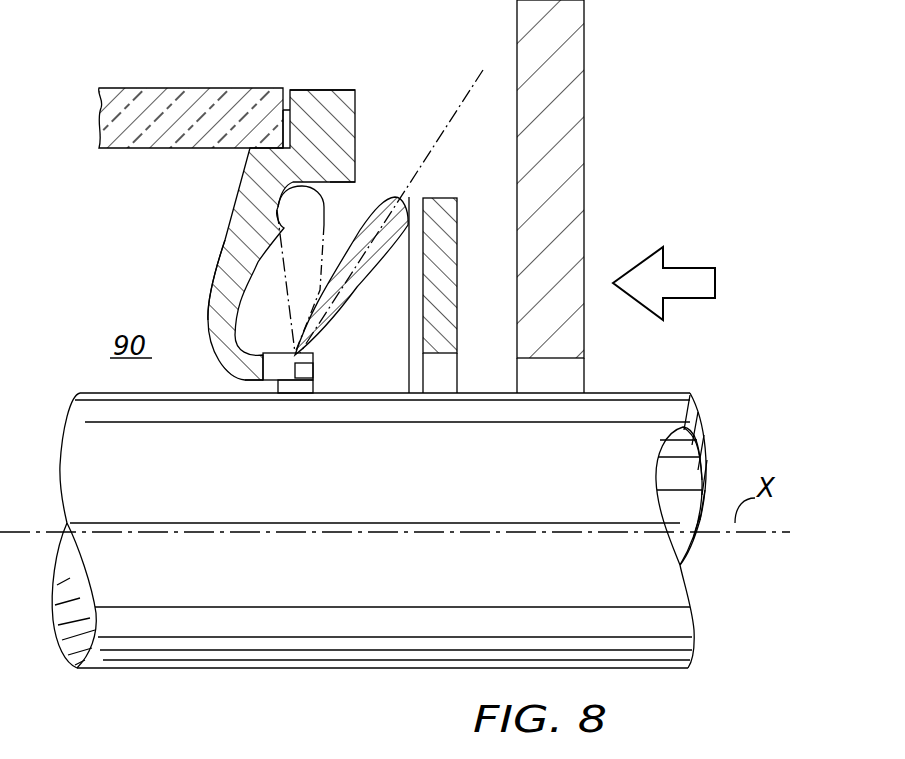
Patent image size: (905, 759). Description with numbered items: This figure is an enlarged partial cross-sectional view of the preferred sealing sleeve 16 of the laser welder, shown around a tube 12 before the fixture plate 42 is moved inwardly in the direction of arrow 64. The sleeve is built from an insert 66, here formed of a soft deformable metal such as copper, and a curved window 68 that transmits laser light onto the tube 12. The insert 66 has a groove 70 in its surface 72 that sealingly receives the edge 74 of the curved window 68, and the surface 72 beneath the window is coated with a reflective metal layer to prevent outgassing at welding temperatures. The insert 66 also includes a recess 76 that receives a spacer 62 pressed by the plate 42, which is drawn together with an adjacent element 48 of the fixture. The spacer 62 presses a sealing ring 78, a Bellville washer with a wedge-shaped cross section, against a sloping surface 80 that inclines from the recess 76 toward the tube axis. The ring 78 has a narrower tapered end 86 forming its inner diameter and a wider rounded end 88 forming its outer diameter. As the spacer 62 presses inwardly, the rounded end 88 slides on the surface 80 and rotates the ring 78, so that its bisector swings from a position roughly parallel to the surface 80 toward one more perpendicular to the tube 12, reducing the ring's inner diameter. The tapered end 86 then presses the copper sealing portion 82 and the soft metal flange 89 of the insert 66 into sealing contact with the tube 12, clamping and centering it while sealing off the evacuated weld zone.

The tube 12 is at (683, 618).
The sealing sleeve 16 is at (322, 88).
The plate 42 is at (585, 190).
The support wall 48 is at (577, 196).
The spacer 62 is at (441, 340).
The arrow 64 is at (686, 275).
The insert 66 is at (287, 210).
The curved window 68 is at (178, 100).
The groove 70 is at (283, 147).
The surface 72 is at (264, 238).
The edge 74 is at (256, 235).
The recess 76 is at (340, 197).
The sealing ring 78 is at (357, 283).
The surface 80 is at (222, 258).
The soft metal portion 82 is at (280, 383).
The tapered end 86 is at (312, 343).
The rounded end 88 is at (400, 196).
The soft metal flange 89 is at (230, 380).